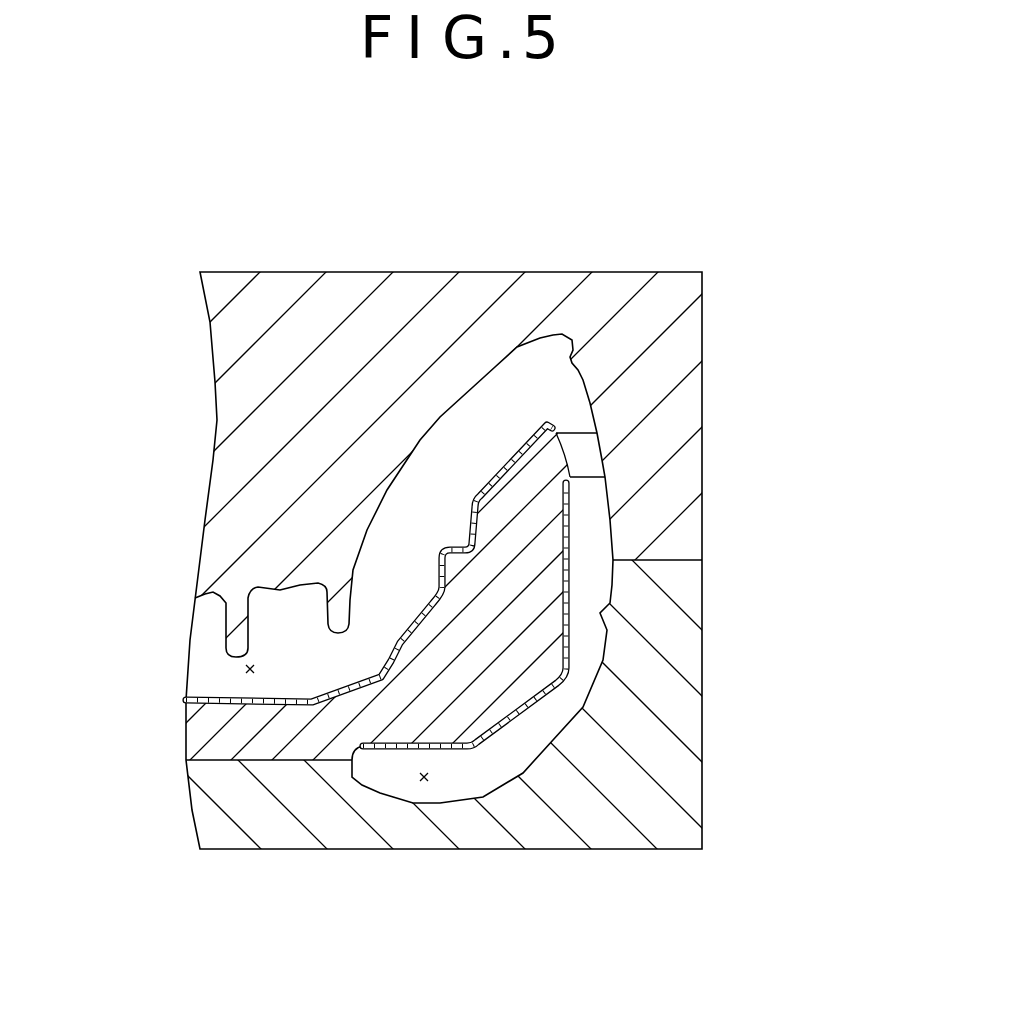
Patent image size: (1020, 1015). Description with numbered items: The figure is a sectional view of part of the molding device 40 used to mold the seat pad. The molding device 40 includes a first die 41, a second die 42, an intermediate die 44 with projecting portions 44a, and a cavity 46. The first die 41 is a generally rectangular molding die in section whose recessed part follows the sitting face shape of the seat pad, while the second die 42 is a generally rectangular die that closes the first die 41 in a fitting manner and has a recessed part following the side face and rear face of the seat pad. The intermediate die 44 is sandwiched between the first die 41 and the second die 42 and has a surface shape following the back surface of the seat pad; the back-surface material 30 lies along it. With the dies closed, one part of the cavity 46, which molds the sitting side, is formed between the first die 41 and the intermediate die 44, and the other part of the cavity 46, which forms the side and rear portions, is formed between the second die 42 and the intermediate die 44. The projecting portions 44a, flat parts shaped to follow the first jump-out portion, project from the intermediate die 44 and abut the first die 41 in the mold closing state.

The molding device 40 is at (658, 222).
The first die 41 is at (478, 297).
The second die 42 is at (675, 647).
The intermediate die 44 is at (203, 731).
The projecting portion 44a is at (587, 450).
The back-surface material 30 is at (405, 632).
The cavity 46 is at (250, 669).